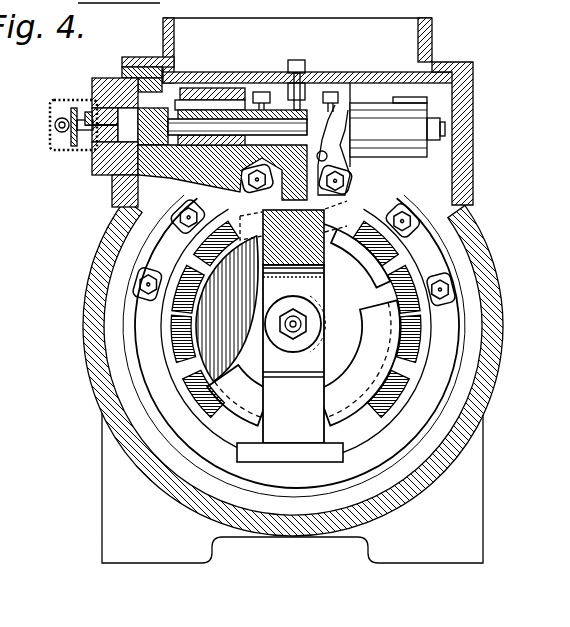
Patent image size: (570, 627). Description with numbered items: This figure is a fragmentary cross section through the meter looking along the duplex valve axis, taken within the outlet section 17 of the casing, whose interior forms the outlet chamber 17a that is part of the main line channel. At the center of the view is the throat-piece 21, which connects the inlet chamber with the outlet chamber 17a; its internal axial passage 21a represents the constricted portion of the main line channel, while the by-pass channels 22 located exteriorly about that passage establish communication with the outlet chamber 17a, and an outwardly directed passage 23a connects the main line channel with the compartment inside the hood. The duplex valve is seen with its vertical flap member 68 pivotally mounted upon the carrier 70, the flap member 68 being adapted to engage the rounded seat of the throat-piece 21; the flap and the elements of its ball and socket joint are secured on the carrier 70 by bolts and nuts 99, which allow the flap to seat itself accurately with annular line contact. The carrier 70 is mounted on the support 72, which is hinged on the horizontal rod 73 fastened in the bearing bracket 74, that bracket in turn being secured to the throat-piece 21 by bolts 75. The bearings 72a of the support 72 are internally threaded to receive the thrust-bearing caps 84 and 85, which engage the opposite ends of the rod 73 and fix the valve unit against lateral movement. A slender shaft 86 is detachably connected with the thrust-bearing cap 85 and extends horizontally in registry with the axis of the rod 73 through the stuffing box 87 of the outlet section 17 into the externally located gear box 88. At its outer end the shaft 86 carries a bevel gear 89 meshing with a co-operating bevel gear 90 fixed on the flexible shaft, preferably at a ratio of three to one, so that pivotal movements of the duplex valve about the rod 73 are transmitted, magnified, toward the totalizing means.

The outlet section 17 is at (493, 318).
The outlet chamber 17a is at (436, 408).
The throat-piece 21 is at (160, 309).
The internal axial passage 21a is at (217, 318).
The by-pass channels 22 is at (163, 308).
The outwardly directed passage 23a is at (366, 76).
The vertical flap member 68 is at (247, 357).
The carrier 70 is at (325, 262).
The support 72 is at (443, 233).
The bearings 72a is at (207, 100).
The horizontal rod 73 is at (292, 125).
The bearing bracket 74 is at (345, 178).
The bolts 75 is at (325, 203).
The thrust-bearing cap 84 is at (432, 110).
The thrust-bearing cap 85 is at (158, 157).
The slender shaft 86 is at (120, 78).
The stuffing box 87 is at (92, 100).
The gear box 88 is at (50, 112).
The bevel gear 89 is at (72, 145).
The bevel gear 90 is at (56, 128).
The nuts 99 is at (300, 324).